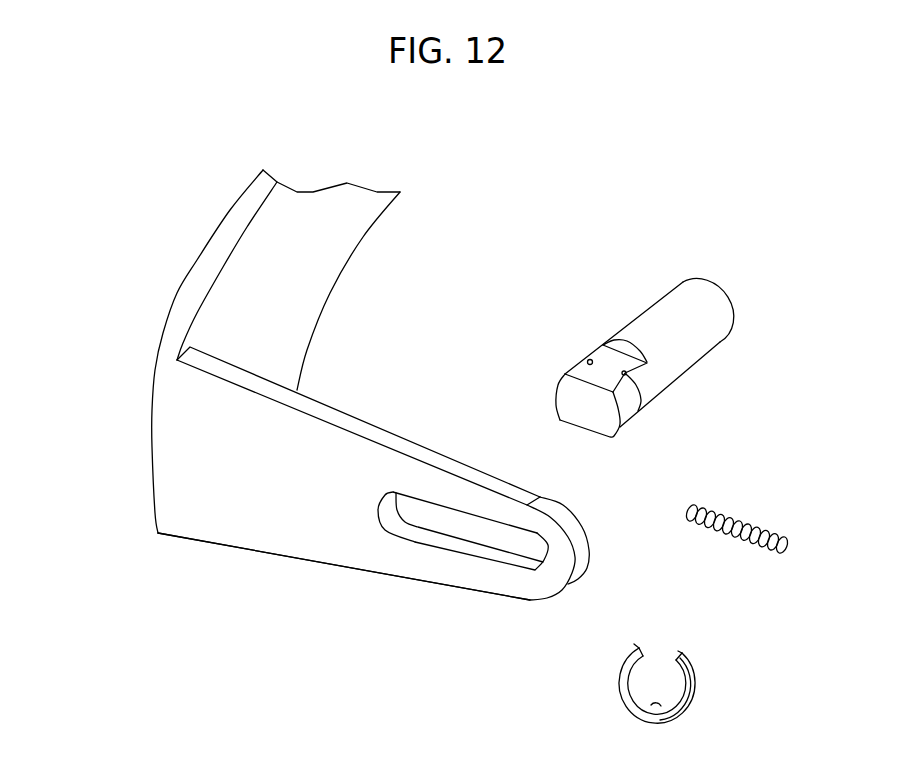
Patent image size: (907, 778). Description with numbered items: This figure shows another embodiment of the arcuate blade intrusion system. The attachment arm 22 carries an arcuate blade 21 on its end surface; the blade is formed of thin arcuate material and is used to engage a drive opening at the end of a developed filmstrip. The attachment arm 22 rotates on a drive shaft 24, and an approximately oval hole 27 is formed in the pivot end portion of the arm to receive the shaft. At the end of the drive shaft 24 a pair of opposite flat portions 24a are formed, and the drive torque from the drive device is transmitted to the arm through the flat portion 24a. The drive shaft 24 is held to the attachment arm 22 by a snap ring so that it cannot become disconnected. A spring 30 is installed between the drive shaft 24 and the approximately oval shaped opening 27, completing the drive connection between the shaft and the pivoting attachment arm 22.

The arcuate blade 21 is at (319, 417).
The attachment arm 22 is at (223, 500).
The drive shaft 24 is at (591, 305).
The flat portion 24a is at (590, 362).
The oval hole 27 is at (447, 540).
The spring 30 is at (783, 533).